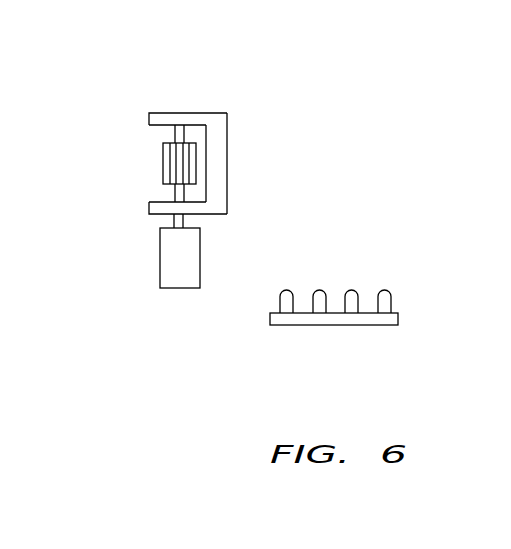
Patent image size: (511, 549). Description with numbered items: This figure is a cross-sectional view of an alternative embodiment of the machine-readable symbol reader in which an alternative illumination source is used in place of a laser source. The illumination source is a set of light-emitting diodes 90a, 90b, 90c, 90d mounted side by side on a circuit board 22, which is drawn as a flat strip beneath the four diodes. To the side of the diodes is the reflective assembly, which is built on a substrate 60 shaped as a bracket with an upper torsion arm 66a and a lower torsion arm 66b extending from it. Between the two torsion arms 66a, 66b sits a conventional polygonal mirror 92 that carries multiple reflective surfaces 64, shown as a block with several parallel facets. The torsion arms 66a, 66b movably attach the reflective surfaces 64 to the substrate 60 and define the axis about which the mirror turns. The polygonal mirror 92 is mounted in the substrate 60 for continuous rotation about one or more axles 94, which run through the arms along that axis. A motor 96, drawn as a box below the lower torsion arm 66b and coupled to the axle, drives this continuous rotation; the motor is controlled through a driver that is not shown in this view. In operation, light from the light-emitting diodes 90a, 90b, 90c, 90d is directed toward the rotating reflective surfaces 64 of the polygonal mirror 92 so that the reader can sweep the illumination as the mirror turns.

The circuit board 22 is at (399, 316).
The substrate 60 is at (228, 190).
The second reflective face 64 is at (163, 159).
The torsion arm 66a is at (149, 118).
The torsion arm 66b is at (148, 207).
The light-emitting diode 90a is at (287, 290).
The light-emitting diode 90b is at (320, 289).
The light-emitting diode 90c is at (352, 290).
The light-emitting diode 90d is at (384, 290).
The polygonal mirror 92 is at (189, 142).
The axle 94 is at (186, 192).
The motor 96 is at (160, 257).